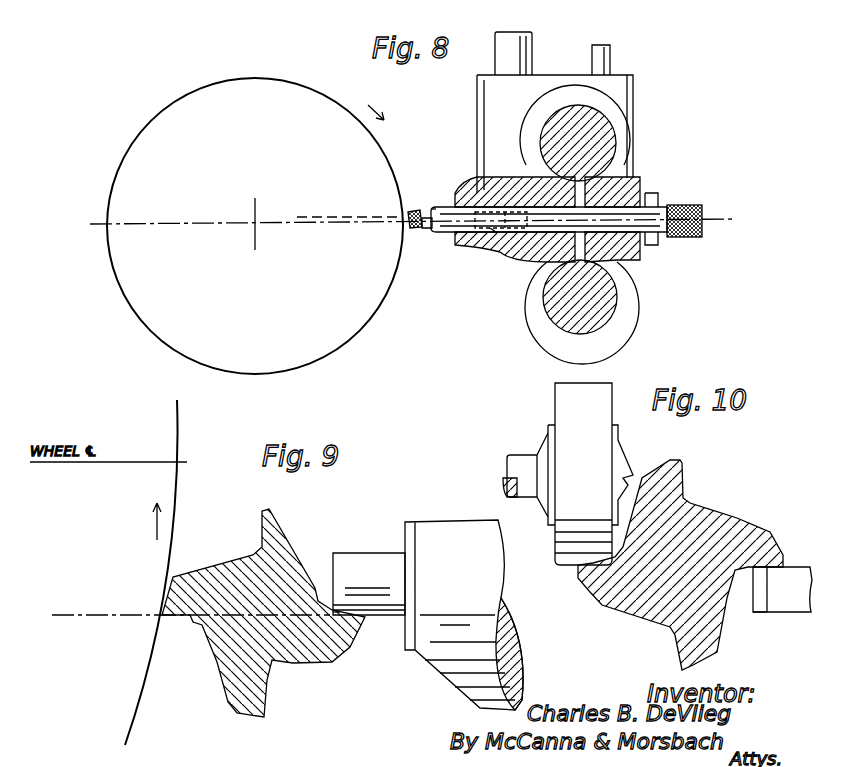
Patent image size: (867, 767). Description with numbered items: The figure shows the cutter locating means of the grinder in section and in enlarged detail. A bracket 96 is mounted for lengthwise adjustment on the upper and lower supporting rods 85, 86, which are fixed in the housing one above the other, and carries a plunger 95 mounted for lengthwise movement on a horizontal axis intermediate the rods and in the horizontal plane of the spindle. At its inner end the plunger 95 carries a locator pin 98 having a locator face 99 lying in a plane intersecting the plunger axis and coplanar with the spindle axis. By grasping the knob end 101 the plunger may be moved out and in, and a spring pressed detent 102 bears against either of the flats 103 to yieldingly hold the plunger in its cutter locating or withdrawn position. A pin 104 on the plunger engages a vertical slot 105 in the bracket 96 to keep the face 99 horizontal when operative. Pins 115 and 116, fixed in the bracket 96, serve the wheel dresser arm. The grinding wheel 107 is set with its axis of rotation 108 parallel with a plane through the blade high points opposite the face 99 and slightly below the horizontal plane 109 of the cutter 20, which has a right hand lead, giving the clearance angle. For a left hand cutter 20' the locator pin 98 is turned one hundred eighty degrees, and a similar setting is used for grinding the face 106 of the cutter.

In FIG. 8, the grinding wheel 107 is at (262, 77).
In FIG. 8, the axis of rotation 108 is at (253, 225).
In FIG. 8, the horizontal plane 109 is at (323, 216).
In FIG. 8, the cutter 20 is at (417, 198).
In FIG. 10, the cutter 20 is at (680, 565).
In FIG. 9, the left hand cutter 20' is at (263, 604).
In FIG. 8, the supporting rod 85 is at (608, 140).
In FIG. 8, the supporting rod 86 is at (603, 307).
In FIG. 8, the plunger 95 is at (660, 213).
In FIG. 9, the plunger 95 is at (460, 530).
In FIG. 10, the plunger 95 is at (568, 474).
In FIG. 8, the bracket 96 is at (633, 168).
In FIG. 8, the locator pin 98 is at (430, 230).
In FIG. 9, the locator pin 98 is at (372, 565).
In FIG. 10, the locator pin 98 is at (770, 612).
In FIG. 8, the locator face 99 is at (435, 207).
In FIG. 9, the locator face 99 is at (380, 617).
In FIG. 10, the locator face 99 is at (787, 567).
In FIG. 8, the knob end 101 is at (702, 227).
In FIG. 8, the spring pressed detent 102 is at (500, 240).
In FIG. 8, the flats 103 is at (490, 228).
In FIG. 8, the pin 104 is at (645, 248).
In FIG. 8, the vertical slot 105 is at (657, 203).
In FIG. 10, the face 106 is at (590, 566).
In FIG. 8, the pin 115 is at (525, 45).
In FIG. 8, the pin 116 is at (600, 55).